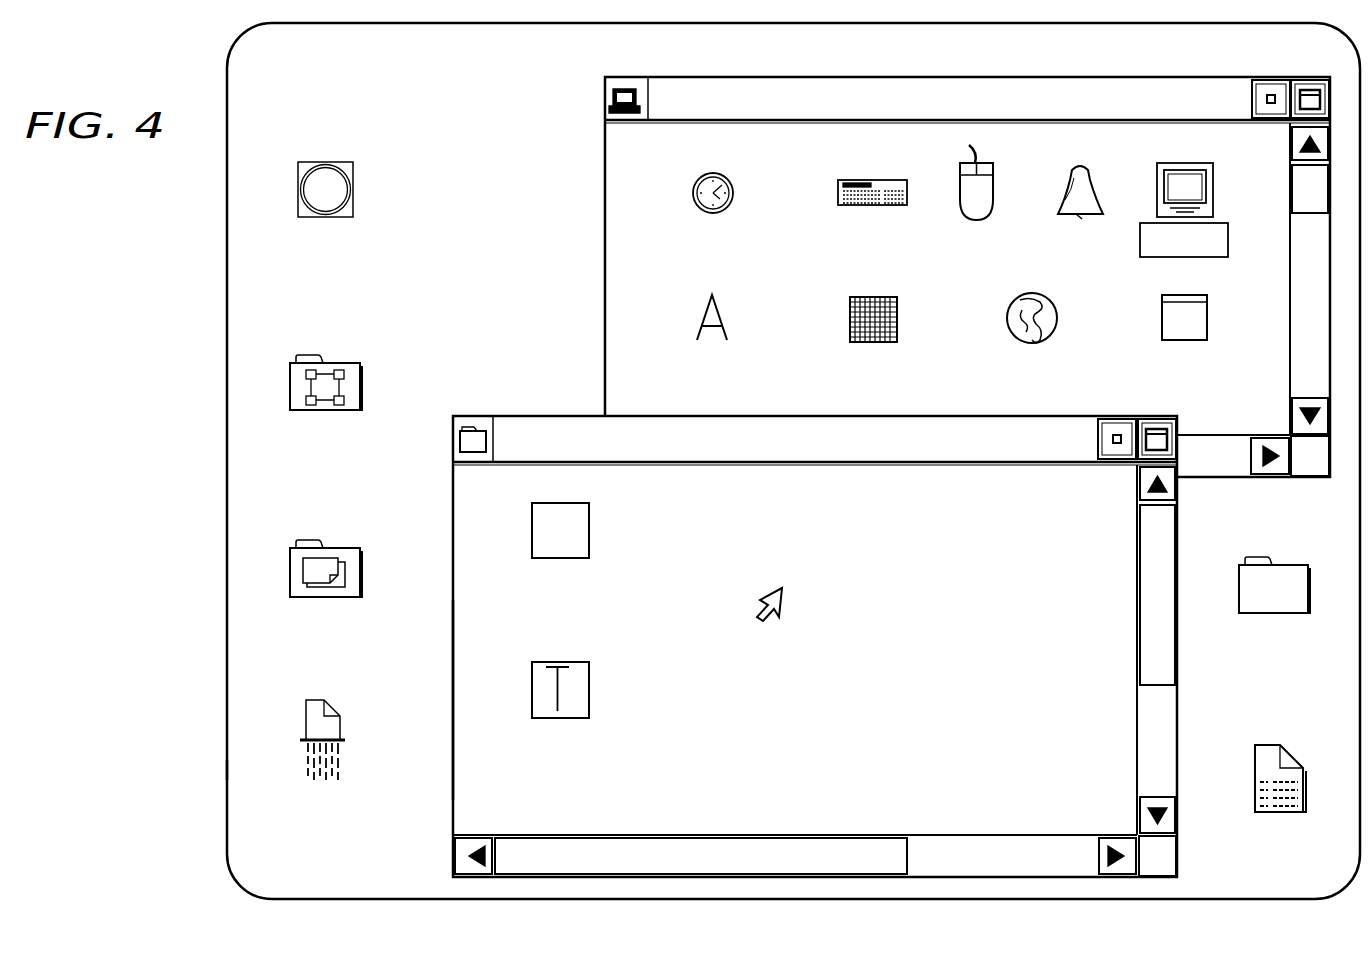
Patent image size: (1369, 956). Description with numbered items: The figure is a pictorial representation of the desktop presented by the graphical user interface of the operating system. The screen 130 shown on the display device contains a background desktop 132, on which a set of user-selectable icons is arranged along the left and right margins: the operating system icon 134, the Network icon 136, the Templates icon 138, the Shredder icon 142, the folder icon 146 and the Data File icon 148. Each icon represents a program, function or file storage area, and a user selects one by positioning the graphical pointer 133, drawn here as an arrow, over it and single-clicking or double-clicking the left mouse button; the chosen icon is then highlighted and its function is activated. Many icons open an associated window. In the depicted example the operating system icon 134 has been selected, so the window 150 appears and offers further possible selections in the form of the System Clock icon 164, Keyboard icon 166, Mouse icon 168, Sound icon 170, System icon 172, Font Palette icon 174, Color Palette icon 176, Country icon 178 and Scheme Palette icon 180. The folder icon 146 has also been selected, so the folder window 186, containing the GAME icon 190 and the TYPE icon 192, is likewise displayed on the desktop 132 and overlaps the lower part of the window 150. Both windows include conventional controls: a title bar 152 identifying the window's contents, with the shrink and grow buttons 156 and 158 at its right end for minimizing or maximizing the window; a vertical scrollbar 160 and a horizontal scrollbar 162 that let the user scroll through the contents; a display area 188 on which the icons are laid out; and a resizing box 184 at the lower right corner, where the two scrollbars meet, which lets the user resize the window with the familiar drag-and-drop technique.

The screen 130 is at (227, 210).
The background desktop 132 is at (227, 770).
The graphical pointer 133 is at (772, 588).
The OS/2 System icon 134 is at (310, 160).
The user-selectable icon 136 is at (310, 355).
The user-selectable icon 138 is at (310, 540).
The user-selectable icon 142 is at (315, 700).
The folder icon 146 is at (1260, 558).
The user-selectable icon 148 is at (1265, 748).
The window 150 is at (945, 282).
The title bar 152 is at (1162, 88).
The minimize button 156 is at (1271, 86).
The maximize button 158 is at (1315, 86).
The vertical scrollbar 160 is at (1142, 640).
The horizontal scrollbar 162 is at (748, 845).
The icon 164 is at (693, 193).
The icon 166 is at (838, 188).
The icon 168 is at (1000, 190).
The icon 170 is at (1092, 185).
The icon 172 is at (1213, 178).
The icon 174 is at (700, 320).
The icon 176 is at (850, 315).
The icon 178 is at (1058, 312).
The icon 180 is at (1207, 315).
The resizing box 184 is at (1306, 480).
The folder window 186 is at (455, 496).
The display area 188 is at (455, 700).
The GAME icon 190 is at (589, 535).
The TYPE icon 192 is at (589, 692).